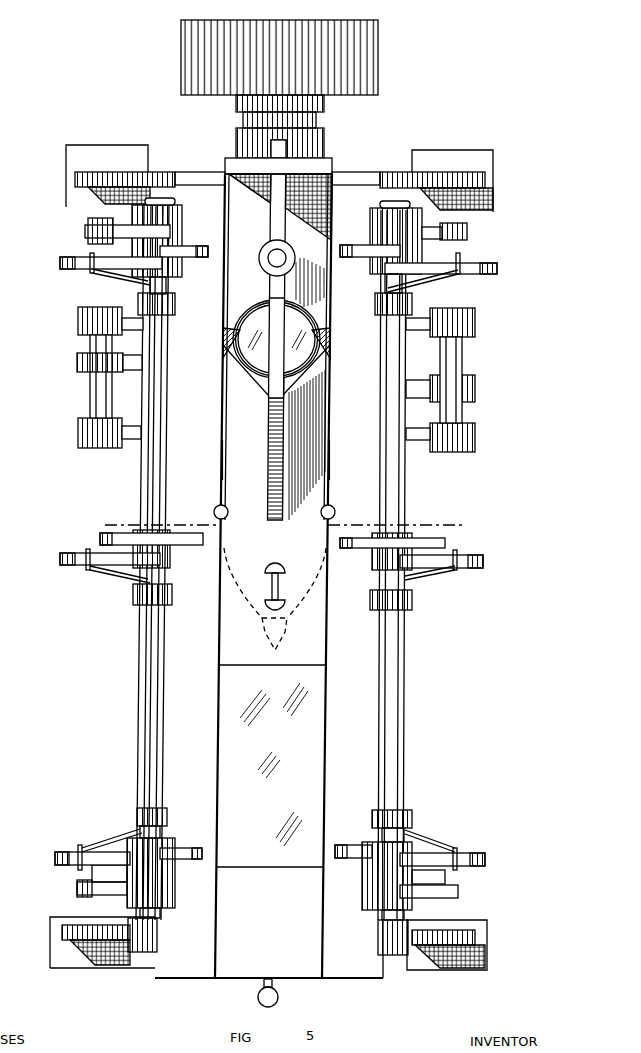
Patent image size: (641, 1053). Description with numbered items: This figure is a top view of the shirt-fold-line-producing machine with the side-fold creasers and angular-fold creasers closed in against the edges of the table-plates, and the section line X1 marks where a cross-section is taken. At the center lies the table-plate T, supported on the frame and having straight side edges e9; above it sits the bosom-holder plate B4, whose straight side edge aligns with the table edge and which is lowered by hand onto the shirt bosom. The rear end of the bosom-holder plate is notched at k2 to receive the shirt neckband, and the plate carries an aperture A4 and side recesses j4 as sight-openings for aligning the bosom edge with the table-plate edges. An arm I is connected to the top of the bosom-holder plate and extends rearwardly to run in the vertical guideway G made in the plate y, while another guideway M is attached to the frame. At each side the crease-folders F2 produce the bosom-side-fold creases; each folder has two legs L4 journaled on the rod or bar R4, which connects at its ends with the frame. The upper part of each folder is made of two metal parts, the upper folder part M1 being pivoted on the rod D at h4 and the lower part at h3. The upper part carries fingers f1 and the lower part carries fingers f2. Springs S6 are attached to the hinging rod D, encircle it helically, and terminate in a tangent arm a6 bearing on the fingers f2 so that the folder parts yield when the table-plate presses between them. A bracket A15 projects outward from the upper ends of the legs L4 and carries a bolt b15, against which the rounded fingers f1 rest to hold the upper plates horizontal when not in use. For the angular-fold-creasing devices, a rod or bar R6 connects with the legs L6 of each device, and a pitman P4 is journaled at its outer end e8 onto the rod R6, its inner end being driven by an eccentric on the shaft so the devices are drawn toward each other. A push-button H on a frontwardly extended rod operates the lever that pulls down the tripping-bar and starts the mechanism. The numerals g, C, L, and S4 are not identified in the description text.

The arm I is at (269, 30).
The gear g is at (243, 120).
The casing C is at (236, 152).
The plate y is at (325, 168).
The vertical guideway G is at (252, 198).
The guideway M is at (290, 246).
The table-plate T is at (271, 573).
The notch k2 is at (268, 393).
The bosom-holder plate B4 is at (284, 445).
The straight side edges e9 is at (222, 462).
The recesses j4 is at (229, 512).
The section line X1 is at (284, 519).
The aperture A4 is at (275, 599).
The push-button H is at (278, 999).
The rod D is at (140, 640).
The upper folder part M1 is at (270, 633).
The crease-folders F2 is at (270, 709).
The bracket box L is at (80, 928).
The bracket A15 is at (132, 224).
The bolt b15 is at (85, 246).
The fingers f2 is at (60, 266).
The tangent arm a6 is at (92, 274).
The collar S4 is at (137, 296).
The springs S6 is at (412, 296).
The legs L4 is at (115, 333).
The rod or bar R4 is at (90, 388).
The outer end of pitman e8 is at (78, 356).
The legs L6 is at (430, 334).
The rod or bar R6 is at (462, 354).
The pitman P4 is at (416, 383).
The pivot of upper folder part h4 is at (160, 533).
The fingers f1 is at (100, 538).
The pivot of lower folder part h3 is at (170, 560).